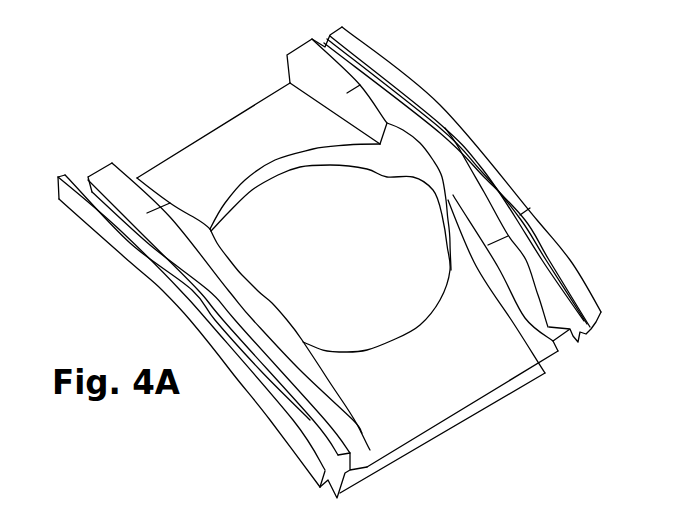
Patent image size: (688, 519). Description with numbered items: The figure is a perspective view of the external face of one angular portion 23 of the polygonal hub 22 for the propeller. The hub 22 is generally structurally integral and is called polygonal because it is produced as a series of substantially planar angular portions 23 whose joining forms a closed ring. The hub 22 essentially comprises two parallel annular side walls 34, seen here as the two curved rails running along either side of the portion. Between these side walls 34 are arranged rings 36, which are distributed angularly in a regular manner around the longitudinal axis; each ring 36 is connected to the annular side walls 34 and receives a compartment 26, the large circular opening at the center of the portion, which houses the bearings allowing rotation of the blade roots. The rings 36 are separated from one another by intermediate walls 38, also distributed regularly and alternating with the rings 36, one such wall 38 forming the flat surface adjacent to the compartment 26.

The hub 22 is at (429, 370).
The angular portion 23 is at (489, 151).
The compartment 26 is at (431, 309).
The annular side wall 34 is at (440, 105).
The ring 36 is at (340, 393).
The intermediate wall 38 is at (200, 165).